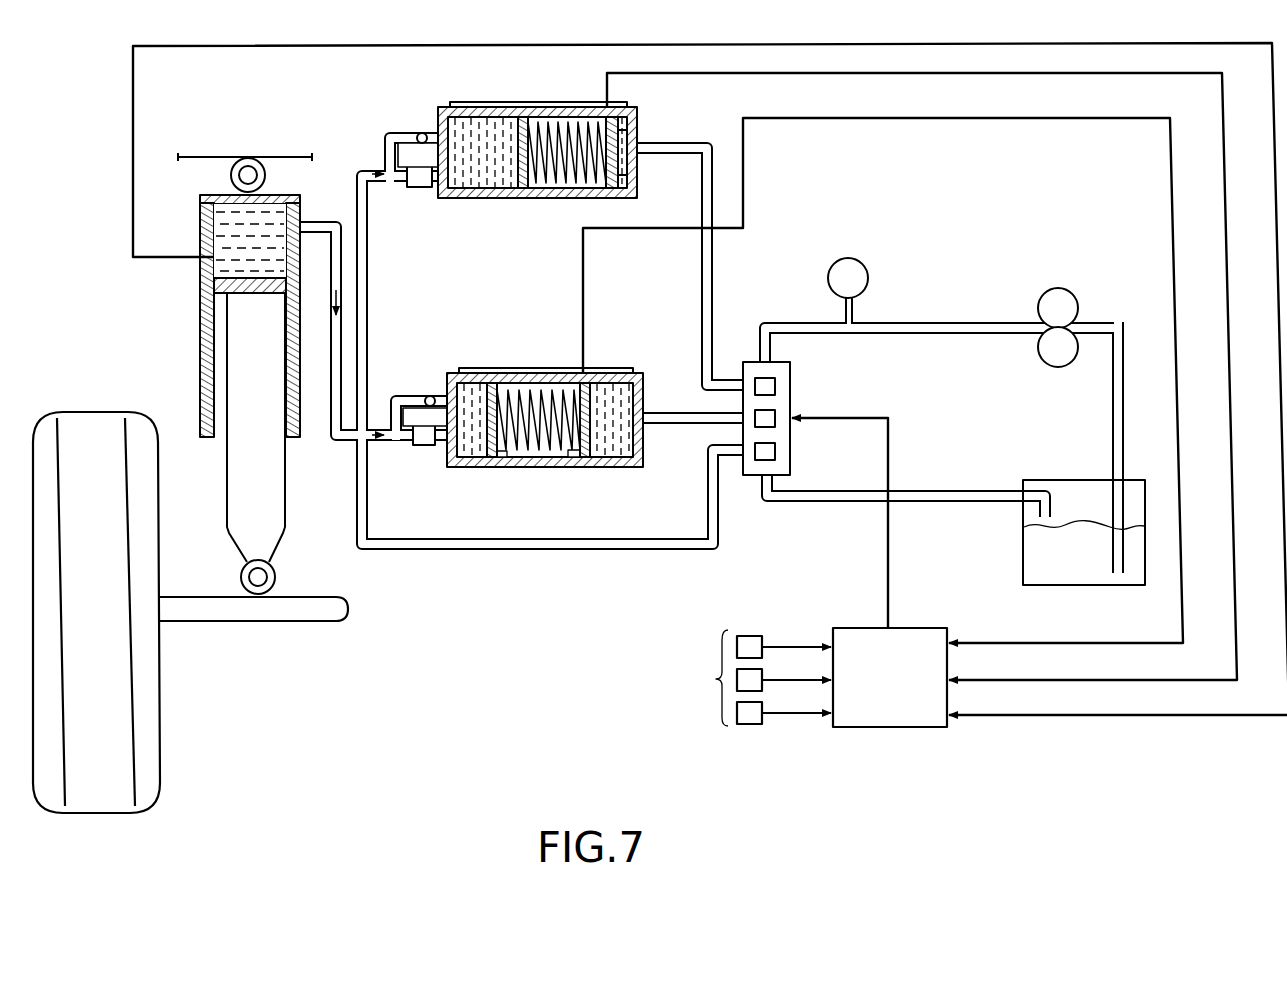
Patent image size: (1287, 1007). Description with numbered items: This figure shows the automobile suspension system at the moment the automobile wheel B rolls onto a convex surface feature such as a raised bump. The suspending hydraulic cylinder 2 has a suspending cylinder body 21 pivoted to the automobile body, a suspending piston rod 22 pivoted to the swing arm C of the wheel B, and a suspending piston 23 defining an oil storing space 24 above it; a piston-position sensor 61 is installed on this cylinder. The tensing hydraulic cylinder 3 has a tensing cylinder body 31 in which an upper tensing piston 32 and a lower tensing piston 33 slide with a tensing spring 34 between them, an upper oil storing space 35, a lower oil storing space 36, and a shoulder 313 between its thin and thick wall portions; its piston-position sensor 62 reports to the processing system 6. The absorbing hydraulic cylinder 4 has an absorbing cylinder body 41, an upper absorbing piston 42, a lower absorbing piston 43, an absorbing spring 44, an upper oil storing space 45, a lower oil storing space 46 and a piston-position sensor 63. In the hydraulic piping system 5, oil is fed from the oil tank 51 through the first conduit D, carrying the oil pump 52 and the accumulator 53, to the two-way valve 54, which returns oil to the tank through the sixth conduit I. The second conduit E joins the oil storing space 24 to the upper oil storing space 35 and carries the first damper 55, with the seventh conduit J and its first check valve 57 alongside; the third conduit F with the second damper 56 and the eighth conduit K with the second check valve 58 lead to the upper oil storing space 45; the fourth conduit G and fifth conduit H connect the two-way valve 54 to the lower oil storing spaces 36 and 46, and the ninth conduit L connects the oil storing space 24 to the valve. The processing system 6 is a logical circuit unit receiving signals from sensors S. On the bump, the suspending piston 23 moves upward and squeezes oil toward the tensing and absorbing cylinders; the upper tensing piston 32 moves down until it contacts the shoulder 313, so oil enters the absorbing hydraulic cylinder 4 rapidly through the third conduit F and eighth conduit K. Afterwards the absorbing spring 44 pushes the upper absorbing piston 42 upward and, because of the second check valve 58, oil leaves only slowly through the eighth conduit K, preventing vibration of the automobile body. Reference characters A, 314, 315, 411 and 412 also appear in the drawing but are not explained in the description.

The suspending hydraulic cylinder 2 is at (234, 376).
The suspending cylinder body 21 is at (210, 197).
The suspending piston rod 22 is at (227, 494).
The suspending piston 23 is at (230, 271).
The oil storing space 24 is at (213, 231).
The piston-position sensor 61 is at (205, 346).
The tensing hydraulic cylinder 3 is at (546, 167).
The tensing cylinder body 31 is at (637, 117).
The upper tensing piston 32 is at (500, 108).
The lower tensing piston 33 is at (600, 198).
The tensing spring 34 is at (565, 192).
The upper oil storing space 35 is at (446, 110).
The lower oil storing space 36 is at (637, 137).
The shoulder 313 is at (544, 106).
The fluid chamber 314 is at (448, 199).
The end wall 315 is at (638, 187).
The absorbing hydraulic cylinder 4 is at (560, 435).
The absorbing cylinder body 41 is at (576, 469).
The stopper 411 is at (454, 469).
The housing cap 412 is at (646, 440).
The upper absorbing piston 42 is at (491, 469).
The lower absorbing piston 43 is at (588, 469).
The absorbing spring 44 is at (533, 388).
The upper oil storing space 45 is at (464, 469).
The lower oil storing space 46 is at (634, 468).
The hydraulic piping system 5 is at (944, 421).
The oil tank 51 is at (1022, 551).
The oil pump 52 is at (1079, 309).
The accumulator 53 is at (869, 284).
The two-way valve 54 is at (792, 389).
The first damper 55 is at (425, 190).
The second damper 56 is at (425, 447).
The first check valve 57 is at (419, 131).
The second check valve 58 is at (432, 395).
The processing system 6 is at (893, 730).
The piston-position sensor 62 is at (608, 107).
The piston-position sensor 63 is at (598, 372).
The stroke range A is at (203, 157).
The automobile wheel B is at (161, 736).
The swing arm C is at (255, 623).
The first conduit D is at (1112, 430).
The second conduit E is at (368, 270).
The third conduit F is at (383, 442).
The fourth conduit G is at (713, 272).
The fifth conduit H is at (683, 412).
The sixth conduit I is at (840, 504).
The seventh conduit J is at (383, 140).
The eighth conduit K is at (400, 395).
The ninth conduit L is at (545, 550).
The sensors S is at (764, 678).